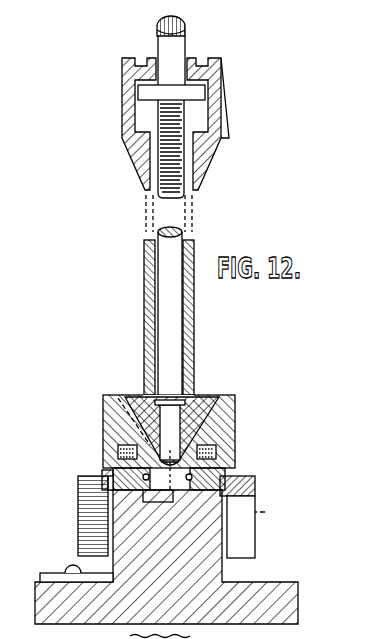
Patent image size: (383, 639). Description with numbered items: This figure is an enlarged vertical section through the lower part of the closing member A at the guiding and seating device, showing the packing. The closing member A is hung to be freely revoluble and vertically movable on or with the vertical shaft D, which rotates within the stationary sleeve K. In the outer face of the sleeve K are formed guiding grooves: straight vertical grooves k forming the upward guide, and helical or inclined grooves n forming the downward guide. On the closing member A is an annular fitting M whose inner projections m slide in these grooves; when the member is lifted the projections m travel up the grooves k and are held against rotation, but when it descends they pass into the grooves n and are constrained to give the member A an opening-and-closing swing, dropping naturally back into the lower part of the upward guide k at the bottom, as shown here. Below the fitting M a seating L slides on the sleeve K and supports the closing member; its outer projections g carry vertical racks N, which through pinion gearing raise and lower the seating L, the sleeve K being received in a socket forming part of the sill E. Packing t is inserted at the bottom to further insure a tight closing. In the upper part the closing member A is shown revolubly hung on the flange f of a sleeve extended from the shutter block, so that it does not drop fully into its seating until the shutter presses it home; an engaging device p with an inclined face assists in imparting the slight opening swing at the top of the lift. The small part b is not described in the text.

The closing member A is at (190, 182).
The vertical shaft D is at (163, 268).
The flange f is at (204, 94).
The engaging device p is at (229, 133).
The stationary sleeve K is at (215, 397).
The helical or inclined groove n is at (196, 398).
The cross piece b is at (170, 416).
The straight vertical groove k is at (140, 400).
The packing t is at (116, 432).
The annular fitting M is at (108, 466).
The inner projection m is at (236, 427).
The seating L is at (113, 473).
The outer projection g is at (108, 493).
The vertical rack N is at (86, 540).
The sill E is at (207, 573).